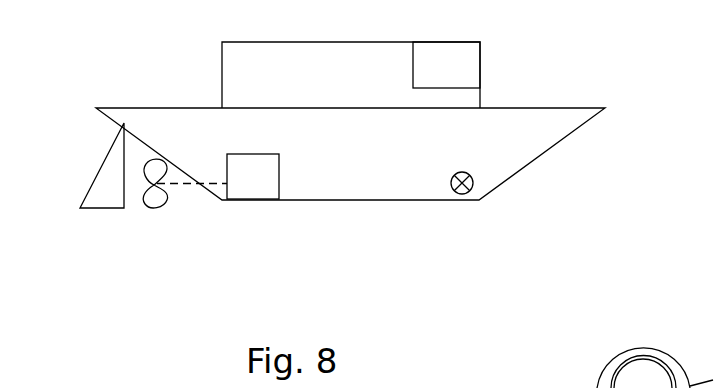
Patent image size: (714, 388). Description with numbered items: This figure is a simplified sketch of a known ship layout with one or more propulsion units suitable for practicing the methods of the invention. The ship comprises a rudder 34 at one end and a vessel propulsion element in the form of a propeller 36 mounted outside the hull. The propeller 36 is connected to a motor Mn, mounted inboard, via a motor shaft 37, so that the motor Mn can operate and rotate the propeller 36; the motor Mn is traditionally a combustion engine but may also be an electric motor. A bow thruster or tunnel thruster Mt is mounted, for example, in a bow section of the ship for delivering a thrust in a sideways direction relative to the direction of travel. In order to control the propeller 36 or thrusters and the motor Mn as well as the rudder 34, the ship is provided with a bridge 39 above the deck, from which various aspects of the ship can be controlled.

The rudder 34 is at (108, 154).
The propeller 36 is at (157, 198).
The motor shaft 37 is at (188, 190).
The bridge 39 is at (498, 57).
The motor Mn is at (260, 189).
The bow thruster Mt is at (479, 185).